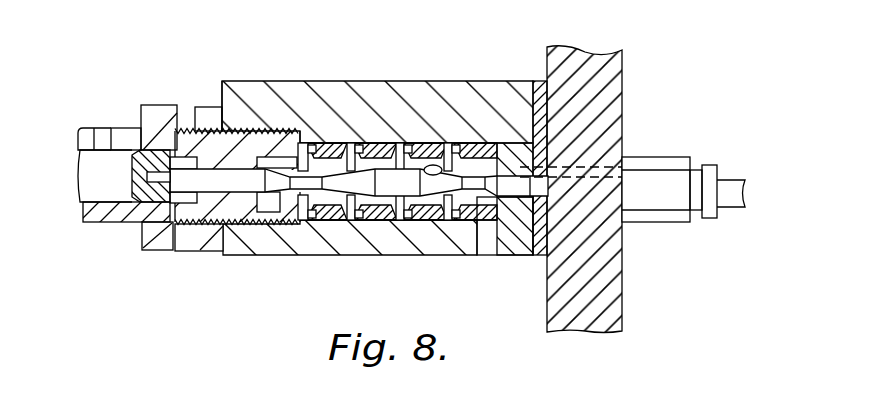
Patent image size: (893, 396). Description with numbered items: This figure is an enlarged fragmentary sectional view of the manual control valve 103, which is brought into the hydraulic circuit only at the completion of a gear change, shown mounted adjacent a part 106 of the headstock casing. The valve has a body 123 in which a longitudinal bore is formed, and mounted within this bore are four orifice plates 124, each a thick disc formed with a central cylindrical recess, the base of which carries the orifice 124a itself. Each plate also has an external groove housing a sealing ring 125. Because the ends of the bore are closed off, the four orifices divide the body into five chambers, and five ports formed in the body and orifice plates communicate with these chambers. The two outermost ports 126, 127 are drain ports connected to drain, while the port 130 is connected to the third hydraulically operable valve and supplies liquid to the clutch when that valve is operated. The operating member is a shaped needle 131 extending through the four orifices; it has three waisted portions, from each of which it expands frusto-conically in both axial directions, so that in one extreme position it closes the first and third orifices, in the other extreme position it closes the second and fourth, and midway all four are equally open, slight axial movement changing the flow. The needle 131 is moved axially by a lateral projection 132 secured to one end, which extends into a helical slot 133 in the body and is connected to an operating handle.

The manual control valve 103 is at (437, 258).
The part of the headstock casing 106 is at (602, 250).
The body 123 is at (393, 243).
The orifice plates 124 is at (405, 148).
The orifice 124a is at (300, 168).
The sealing ring 125 is at (358, 221).
The drain port 126 is at (285, 213).
The drain port 127 is at (483, 242).
The port 130 is at (436, 165).
The shaped needle 131 is at (231, 183).
The lateral projection 132 is at (100, 137).
The helical slot 133 is at (123, 140).